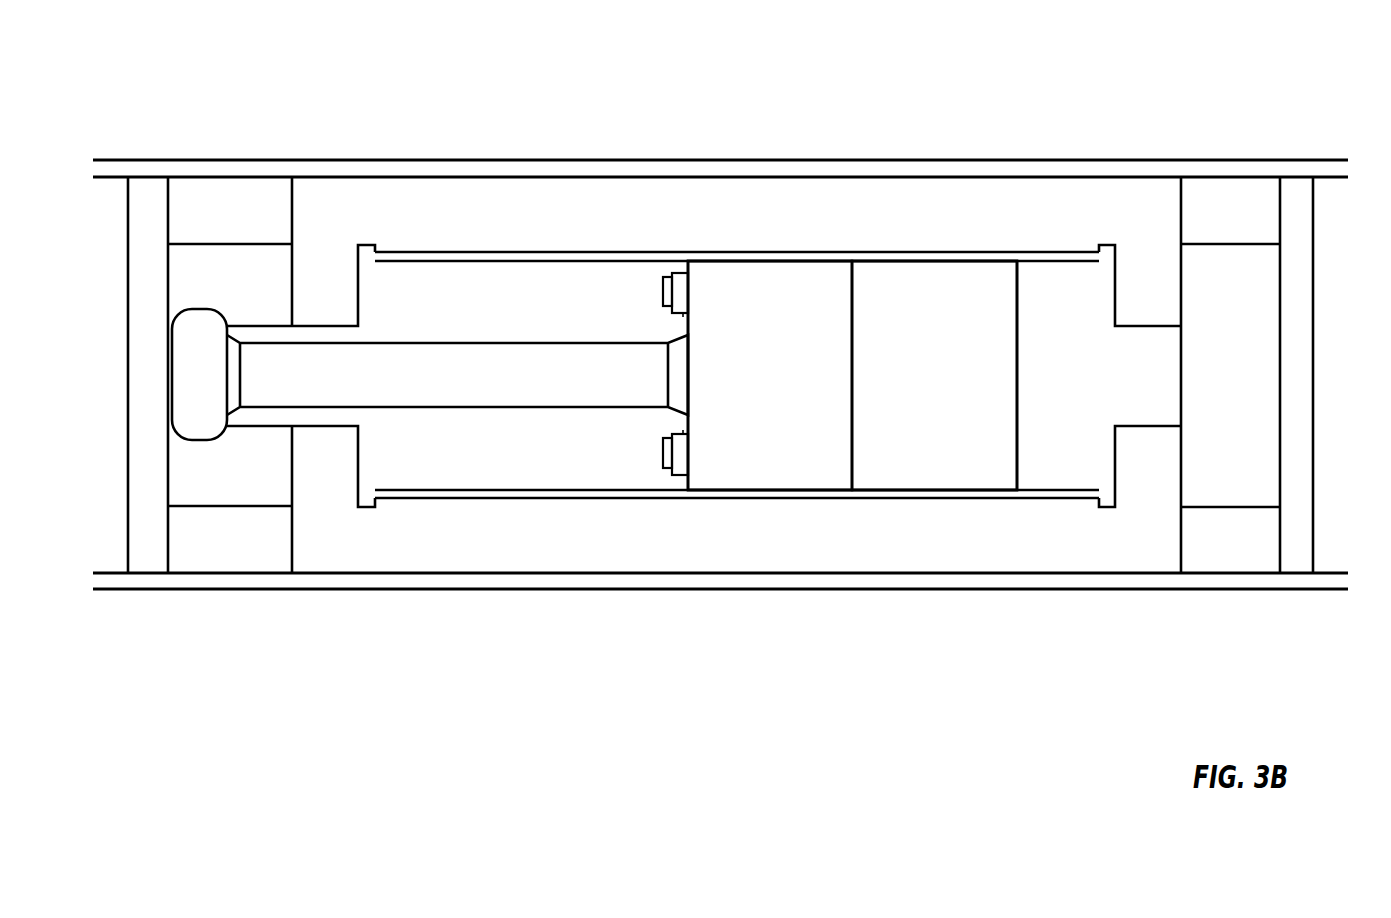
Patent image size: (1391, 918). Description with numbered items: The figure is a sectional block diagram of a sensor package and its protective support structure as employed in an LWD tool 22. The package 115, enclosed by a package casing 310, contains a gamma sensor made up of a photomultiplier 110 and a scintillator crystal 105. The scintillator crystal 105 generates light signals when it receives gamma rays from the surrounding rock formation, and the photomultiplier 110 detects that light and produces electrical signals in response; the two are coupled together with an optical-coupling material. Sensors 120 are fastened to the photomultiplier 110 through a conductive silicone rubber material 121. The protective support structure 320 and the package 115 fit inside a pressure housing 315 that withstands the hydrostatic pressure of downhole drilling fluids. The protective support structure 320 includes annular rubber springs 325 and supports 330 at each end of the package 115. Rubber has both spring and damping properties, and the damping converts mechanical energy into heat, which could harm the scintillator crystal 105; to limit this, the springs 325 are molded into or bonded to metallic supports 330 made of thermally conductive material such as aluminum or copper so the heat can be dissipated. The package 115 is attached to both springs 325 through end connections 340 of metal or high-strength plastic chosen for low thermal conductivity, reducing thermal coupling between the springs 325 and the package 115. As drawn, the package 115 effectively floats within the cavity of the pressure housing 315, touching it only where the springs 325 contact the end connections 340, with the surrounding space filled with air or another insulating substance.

The LWD tool 22 is at (662, 160).
The scintillator crystal 105 is at (934, 375).
The photomultiplier 110 is at (770, 375).
The package 115 is at (824, 498).
The sensors 120 is at (663, 290).
The conductive silicone rubber material 121 is at (686, 316).
The package casing 310 is at (707, 252).
The pressure housing 315 is at (908, 133).
The protective support structure 320 is at (258, 67).
The springs 325 is at (1215, 470).
The supports 330 is at (267, 204).
The end connections 340 is at (333, 326).